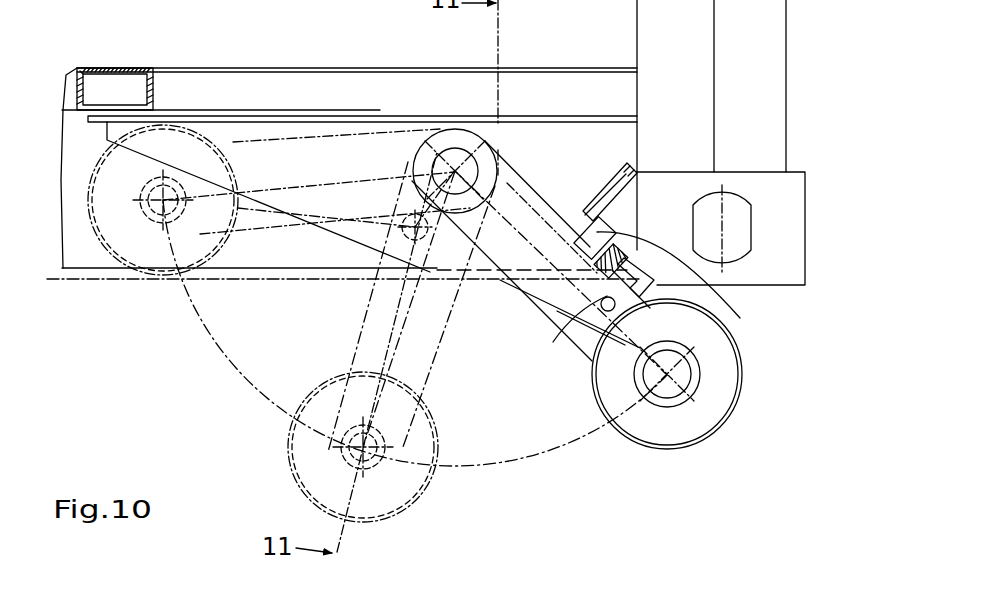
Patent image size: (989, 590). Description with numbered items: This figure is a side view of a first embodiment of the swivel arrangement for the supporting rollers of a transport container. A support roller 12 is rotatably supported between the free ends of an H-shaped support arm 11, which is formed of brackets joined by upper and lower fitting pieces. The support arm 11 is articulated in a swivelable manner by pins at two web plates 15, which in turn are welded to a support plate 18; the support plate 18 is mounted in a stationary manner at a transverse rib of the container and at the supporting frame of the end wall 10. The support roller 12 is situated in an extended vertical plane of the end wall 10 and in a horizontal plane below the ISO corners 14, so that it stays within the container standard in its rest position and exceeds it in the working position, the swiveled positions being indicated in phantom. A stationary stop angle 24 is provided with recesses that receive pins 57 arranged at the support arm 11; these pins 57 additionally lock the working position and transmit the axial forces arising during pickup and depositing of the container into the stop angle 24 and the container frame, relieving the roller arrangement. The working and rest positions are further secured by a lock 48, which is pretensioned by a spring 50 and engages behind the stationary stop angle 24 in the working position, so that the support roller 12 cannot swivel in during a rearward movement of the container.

The end wall 10 is at (772, 131).
The support arm 11 is at (512, 185).
The support roller 12 is at (714, 353).
The ISO corner 14 is at (792, 207).
The web plate 15 is at (547, 176).
The support plate 18 is at (350, 117).
The stop angle 24 is at (600, 193).
The lock 48 is at (732, 340).
The spring 50 is at (557, 330).
The pin 57 is at (660, 282).